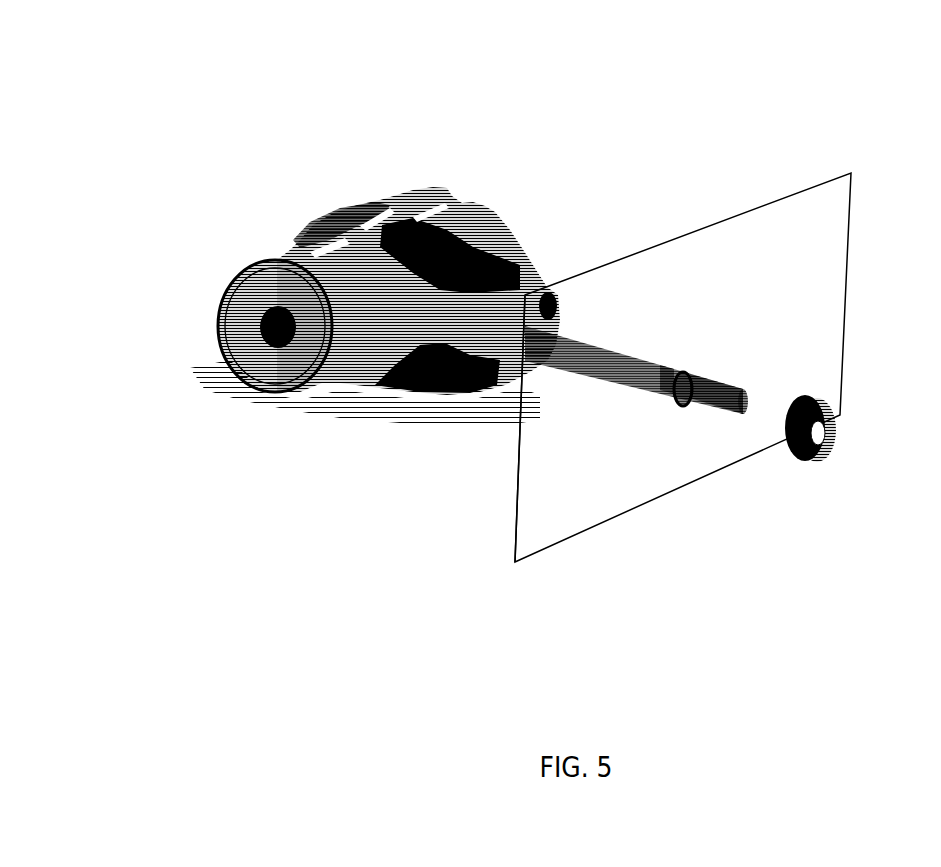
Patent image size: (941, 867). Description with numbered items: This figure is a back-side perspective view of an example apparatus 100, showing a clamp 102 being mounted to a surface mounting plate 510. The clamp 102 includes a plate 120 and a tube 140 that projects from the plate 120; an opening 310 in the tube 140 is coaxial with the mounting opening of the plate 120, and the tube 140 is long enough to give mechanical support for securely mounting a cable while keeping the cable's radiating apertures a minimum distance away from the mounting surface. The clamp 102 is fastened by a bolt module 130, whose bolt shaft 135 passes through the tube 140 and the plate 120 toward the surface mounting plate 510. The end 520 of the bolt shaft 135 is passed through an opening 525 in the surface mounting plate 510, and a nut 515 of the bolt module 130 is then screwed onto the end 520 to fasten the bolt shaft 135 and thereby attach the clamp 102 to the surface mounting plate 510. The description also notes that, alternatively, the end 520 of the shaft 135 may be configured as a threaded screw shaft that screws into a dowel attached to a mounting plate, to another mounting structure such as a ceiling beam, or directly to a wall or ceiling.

The apparatus 100 is at (127, 75).
The clamp 102 is at (307, 150).
The plate 120 is at (522, 292).
The tube 140 is at (630, 352).
The bolt module 130 is at (863, 294).
The opening 310 is at (690, 372).
The bolt shaft 135 is at (717, 383).
The nut 515 is at (829, 410).
The opening 525 is at (673, 392).
The end 520 is at (723, 413).
The surface mounting plate 510 is at (517, 476).